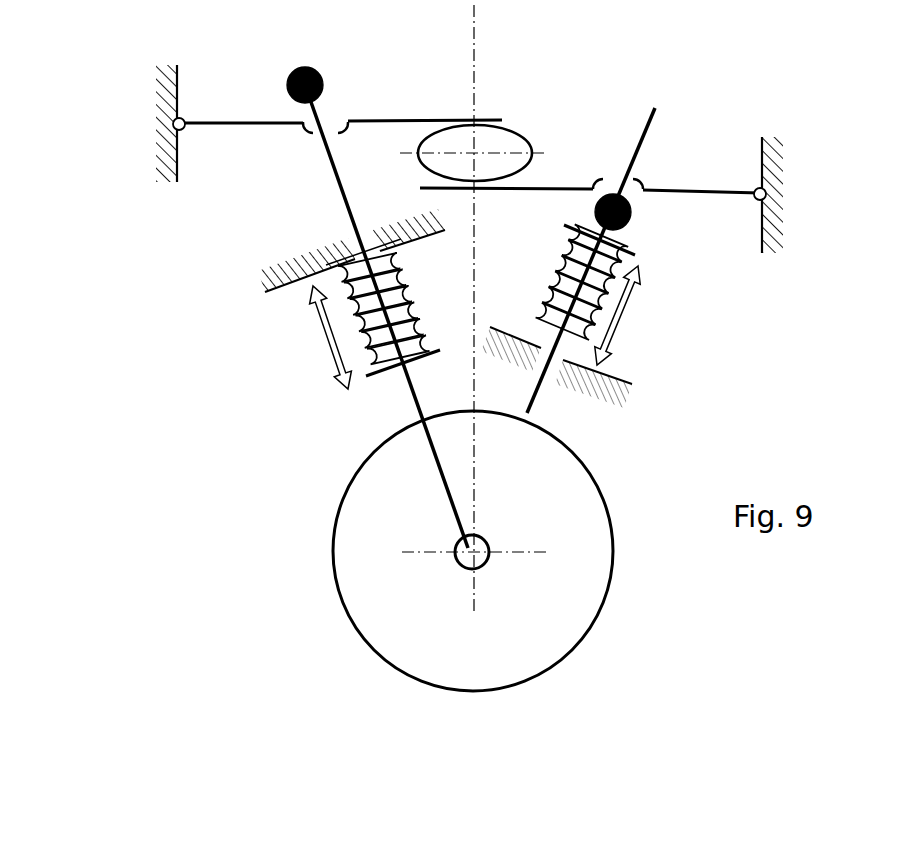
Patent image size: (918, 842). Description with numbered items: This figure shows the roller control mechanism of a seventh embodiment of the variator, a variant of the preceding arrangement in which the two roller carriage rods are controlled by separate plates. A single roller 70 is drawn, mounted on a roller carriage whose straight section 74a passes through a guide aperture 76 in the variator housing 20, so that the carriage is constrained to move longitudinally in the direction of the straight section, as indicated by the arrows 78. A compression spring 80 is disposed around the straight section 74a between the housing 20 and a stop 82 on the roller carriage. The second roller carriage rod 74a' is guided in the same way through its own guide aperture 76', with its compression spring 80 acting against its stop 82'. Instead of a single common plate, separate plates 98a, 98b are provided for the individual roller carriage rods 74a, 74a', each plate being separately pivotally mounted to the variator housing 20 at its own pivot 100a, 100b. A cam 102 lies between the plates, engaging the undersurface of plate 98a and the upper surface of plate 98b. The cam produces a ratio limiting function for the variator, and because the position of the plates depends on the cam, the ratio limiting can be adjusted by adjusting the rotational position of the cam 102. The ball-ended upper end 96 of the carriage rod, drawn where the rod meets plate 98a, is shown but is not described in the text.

The housing 20 is at (158, 168).
The roller 70 is at (592, 581).
The straight section 74a is at (355, 316).
The roller carriage rod 74a' is at (655, 213).
The guide aperture 76 is at (344, 235).
The guide aperture 76' is at (591, 268).
The arrows 78 is at (320, 333).
The compression spring 80 is at (402, 280).
The stop 82 is at (410, 371).
The stop 82' is at (589, 229).
The ball joint 96 is at (293, 72).
The plate 98a is at (396, 118).
The plate 98b is at (507, 192).
The pivot 100a is at (184, 119).
The pivot 100b is at (756, 190).
The cam 102 is at (500, 137).